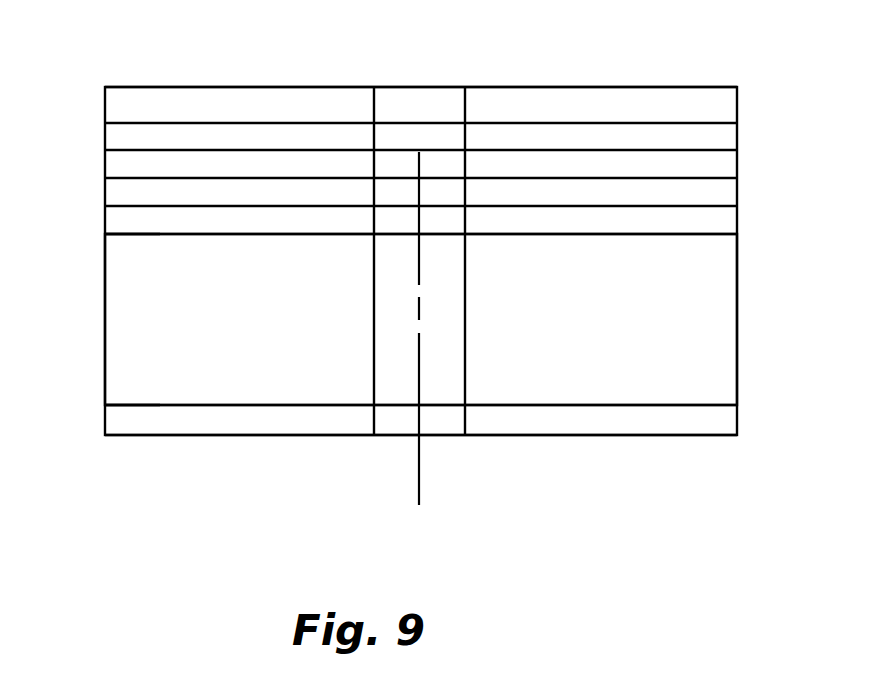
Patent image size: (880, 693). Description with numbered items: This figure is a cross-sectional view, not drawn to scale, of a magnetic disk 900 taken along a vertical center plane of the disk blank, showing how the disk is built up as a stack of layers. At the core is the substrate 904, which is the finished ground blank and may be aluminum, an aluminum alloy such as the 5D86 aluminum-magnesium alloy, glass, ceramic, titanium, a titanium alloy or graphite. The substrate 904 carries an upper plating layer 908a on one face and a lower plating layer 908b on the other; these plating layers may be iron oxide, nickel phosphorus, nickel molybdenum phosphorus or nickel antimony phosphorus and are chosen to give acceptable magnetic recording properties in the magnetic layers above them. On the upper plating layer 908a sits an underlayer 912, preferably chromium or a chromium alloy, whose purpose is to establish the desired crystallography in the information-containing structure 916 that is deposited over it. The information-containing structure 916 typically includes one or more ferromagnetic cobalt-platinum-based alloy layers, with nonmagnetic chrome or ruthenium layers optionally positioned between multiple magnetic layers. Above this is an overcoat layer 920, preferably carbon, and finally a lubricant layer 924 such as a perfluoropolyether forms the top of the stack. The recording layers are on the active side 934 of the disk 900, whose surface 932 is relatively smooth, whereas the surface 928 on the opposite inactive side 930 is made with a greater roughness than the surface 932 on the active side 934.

The magnetic disk 900 is at (143, 491).
The substrate 904 is at (737, 272).
The upper plating layer 908a is at (737, 218).
The lower plating layer 908b is at (737, 415).
The underlayer 912 is at (737, 192).
The information-containing structure 916 is at (737, 160).
The overcoat layer 920 is at (737, 134).
The lubricant layer 924 is at (737, 97).
The surface on inactive side 928 is at (143, 406).
The inactive side 930 is at (277, 437).
The surface on active side 932 is at (140, 233).
The active side 934 is at (296, 87).